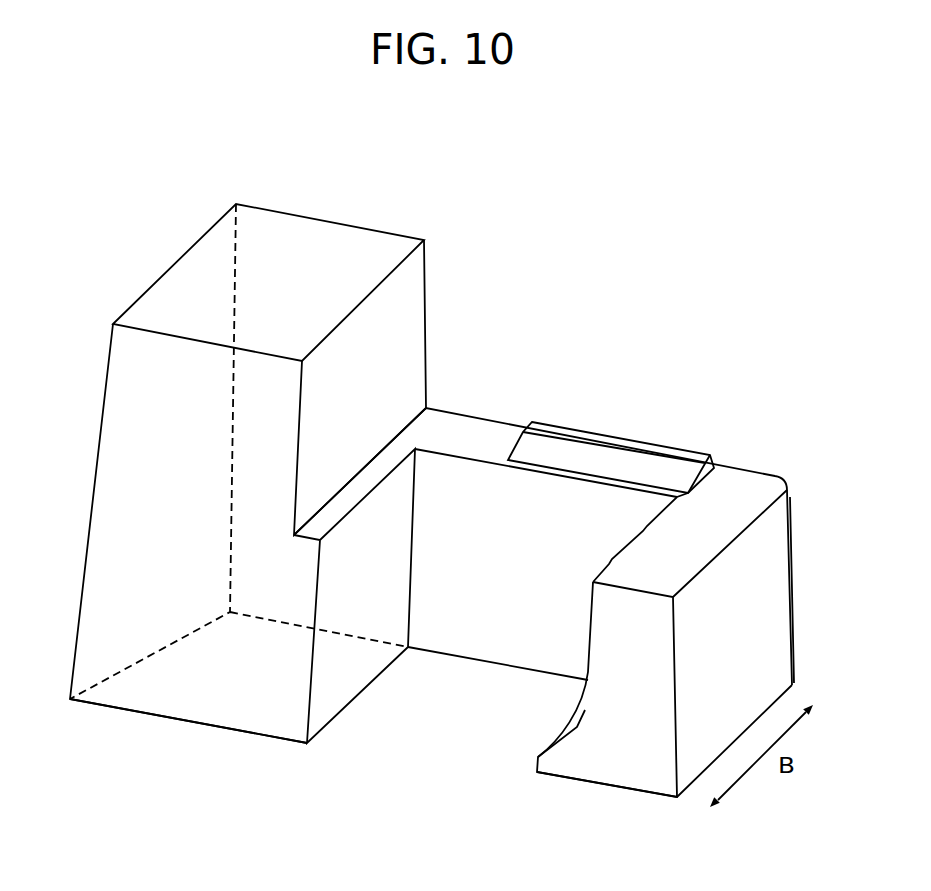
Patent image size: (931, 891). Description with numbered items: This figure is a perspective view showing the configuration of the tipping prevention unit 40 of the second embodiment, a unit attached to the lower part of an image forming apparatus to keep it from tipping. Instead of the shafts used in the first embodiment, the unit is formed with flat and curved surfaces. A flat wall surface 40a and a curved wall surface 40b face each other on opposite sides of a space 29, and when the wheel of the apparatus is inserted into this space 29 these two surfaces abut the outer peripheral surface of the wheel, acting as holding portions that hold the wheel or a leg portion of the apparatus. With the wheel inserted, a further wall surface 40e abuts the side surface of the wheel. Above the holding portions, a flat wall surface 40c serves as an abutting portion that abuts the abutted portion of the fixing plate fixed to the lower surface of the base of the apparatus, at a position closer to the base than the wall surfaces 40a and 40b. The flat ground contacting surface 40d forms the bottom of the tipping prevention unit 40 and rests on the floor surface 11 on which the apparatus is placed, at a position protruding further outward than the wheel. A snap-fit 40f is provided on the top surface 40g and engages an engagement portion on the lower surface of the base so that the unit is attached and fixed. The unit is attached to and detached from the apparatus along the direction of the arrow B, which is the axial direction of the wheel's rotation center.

The floor surface 11 is at (404, 763).
The space 29 is at (462, 542).
The tipping prevention unit 40 is at (314, 214).
The wall surface 40a is at (335, 672).
The curved wall surface 40b is at (582, 708).
The wall surface 40c is at (413, 303).
The ground contacting surface 40d is at (120, 708).
The wall surface 40e is at (528, 522).
The snap-fit 40f is at (650, 470).
The top surface 40g is at (731, 497).